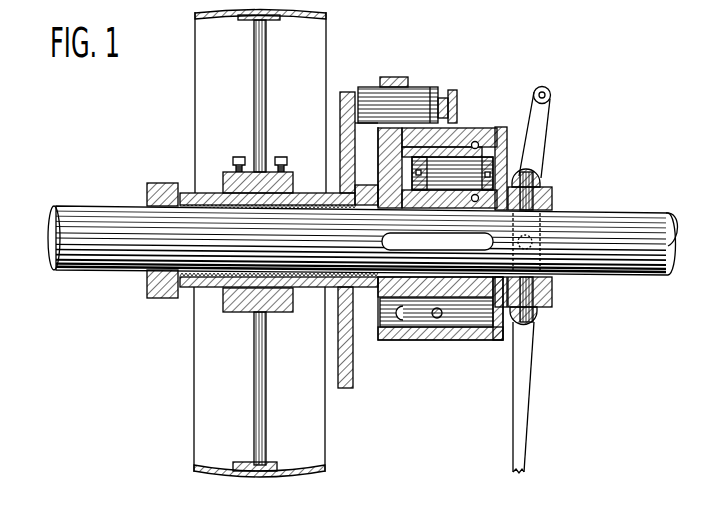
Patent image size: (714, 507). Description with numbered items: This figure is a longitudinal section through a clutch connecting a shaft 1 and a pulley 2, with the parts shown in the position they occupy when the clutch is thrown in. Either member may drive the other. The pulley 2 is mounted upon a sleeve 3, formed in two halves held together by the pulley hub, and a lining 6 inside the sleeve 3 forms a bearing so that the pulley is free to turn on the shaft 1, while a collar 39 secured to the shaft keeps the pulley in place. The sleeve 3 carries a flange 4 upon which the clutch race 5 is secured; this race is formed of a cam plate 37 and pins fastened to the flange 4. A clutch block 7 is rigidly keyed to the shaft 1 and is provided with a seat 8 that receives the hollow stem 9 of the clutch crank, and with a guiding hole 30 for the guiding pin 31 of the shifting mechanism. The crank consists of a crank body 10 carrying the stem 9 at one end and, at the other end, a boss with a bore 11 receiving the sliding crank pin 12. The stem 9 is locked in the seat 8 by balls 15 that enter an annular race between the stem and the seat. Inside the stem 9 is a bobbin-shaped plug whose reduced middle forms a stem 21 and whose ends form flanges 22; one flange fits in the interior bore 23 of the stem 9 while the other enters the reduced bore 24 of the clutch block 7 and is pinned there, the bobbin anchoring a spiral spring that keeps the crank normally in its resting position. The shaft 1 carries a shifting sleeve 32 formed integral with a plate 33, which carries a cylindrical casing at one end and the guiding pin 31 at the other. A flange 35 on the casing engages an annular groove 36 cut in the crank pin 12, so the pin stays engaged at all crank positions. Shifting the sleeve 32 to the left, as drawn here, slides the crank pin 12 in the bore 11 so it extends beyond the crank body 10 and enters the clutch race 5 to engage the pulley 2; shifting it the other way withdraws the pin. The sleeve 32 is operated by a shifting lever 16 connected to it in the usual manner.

The shaft 1 is at (57, 222).
The pulley 2 is at (192, 377).
The sleeve 3 is at (212, 193).
The flange 4 is at (343, 138).
The clutch race 5 is at (362, 147).
The lining 6 is at (210, 283).
The clutch block 7 is at (412, 297).
The seat 8 is at (465, 130).
The stem 9 is at (453, 130).
The crank body 10 is at (380, 153).
The bore 11 is at (412, 87).
The crank pin 12 is at (428, 105).
The balls 15 is at (478, 132).
The shifting lever 16 is at (522, 450).
The stem of the bobbin 21 is at (448, 198).
The flanges 22 is at (492, 197).
The interior bore 23 is at (459, 180).
The reduced bore 24 is at (502, 128).
The guiding hole 30 is at (378, 338).
The guiding pin 31 is at (468, 313).
The shifting sleeve 32 is at (552, 187).
The plate 33 is at (507, 160).
The flange 35 is at (453, 89).
The annular groove 36 is at (441, 98).
The cam plate 37 is at (355, 192).
The collar 39 is at (147, 293).